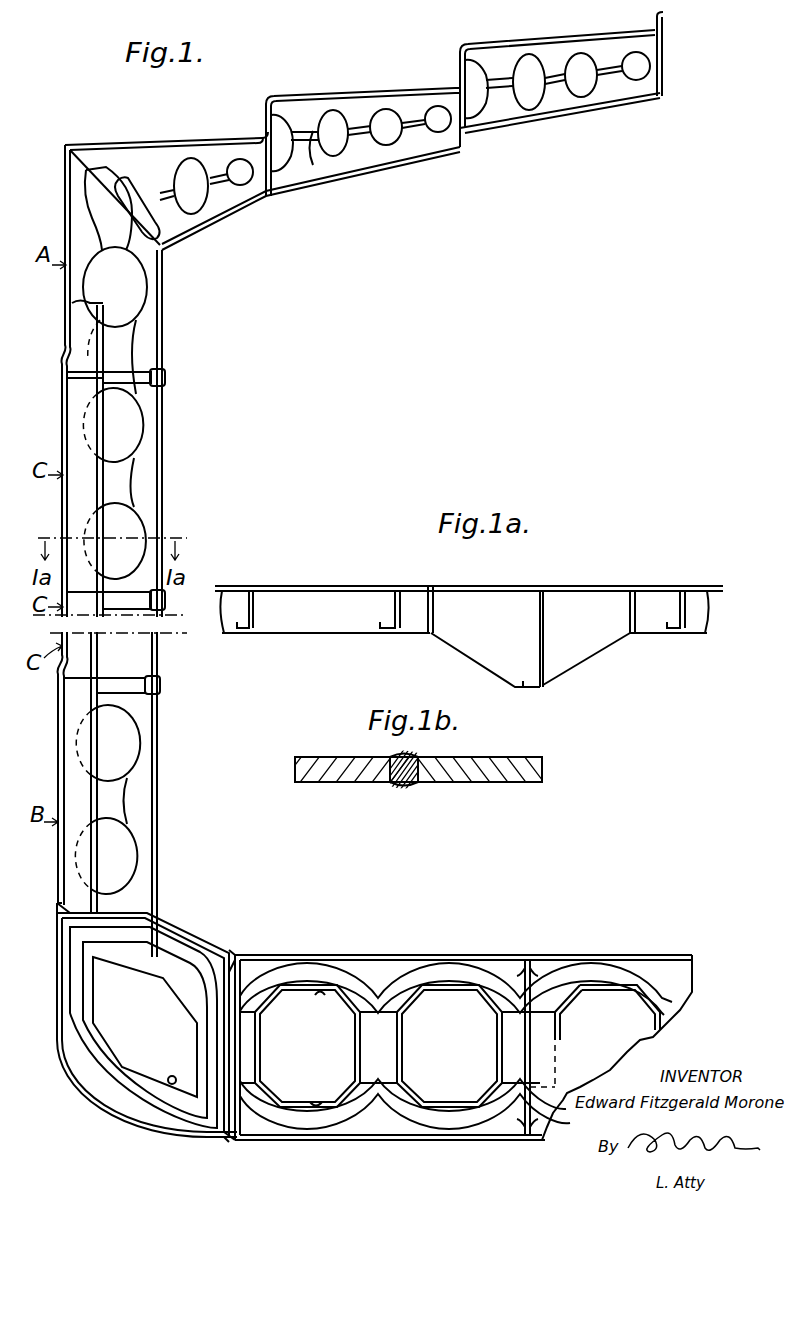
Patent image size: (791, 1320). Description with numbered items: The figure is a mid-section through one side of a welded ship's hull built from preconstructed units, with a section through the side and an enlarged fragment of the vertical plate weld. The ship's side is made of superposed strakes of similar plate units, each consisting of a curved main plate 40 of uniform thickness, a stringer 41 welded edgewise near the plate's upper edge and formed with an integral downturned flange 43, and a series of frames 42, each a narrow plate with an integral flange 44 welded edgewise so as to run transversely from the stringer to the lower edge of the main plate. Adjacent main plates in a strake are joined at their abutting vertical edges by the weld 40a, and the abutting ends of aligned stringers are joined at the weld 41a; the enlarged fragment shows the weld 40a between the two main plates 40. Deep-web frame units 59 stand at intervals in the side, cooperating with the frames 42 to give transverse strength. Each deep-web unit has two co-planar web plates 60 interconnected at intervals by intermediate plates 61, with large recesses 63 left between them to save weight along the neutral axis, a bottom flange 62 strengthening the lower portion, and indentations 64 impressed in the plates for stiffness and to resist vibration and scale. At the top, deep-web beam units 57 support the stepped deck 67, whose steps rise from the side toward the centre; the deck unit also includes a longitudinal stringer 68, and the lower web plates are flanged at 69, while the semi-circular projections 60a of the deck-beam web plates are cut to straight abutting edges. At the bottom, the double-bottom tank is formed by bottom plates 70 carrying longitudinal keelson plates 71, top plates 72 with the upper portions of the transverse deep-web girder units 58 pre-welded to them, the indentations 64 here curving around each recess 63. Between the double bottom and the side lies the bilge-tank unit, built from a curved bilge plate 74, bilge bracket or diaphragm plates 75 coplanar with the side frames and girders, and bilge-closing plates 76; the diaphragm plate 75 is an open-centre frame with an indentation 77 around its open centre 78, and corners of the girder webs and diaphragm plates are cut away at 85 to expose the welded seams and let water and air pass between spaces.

In FIG. 1, the main plate 40 is at (65, 199).
In FIG. 1A, the main plate 40 is at (355, 586).
In FIG. 1B, the main plate 40 is at (300, 764).
In FIG. 1A, the vertical weld between adjacent main plates 40a is at (434, 588).
In FIG. 1B, the vertical weld between adjacent main plates 40a is at (410, 760).
In FIG. 1, the stringer 41 is at (86, 378).
In FIG. 1A, the stringer 41 is at (318, 633).
In FIG. 1A, the weld between aligned stringers 41a is at (435, 640).
In FIG. 1, the frame 42 is at (78, 492).
In FIG. 1A, the frame 42 is at (392, 612).
In FIG. 1, the downturned flange of stringer 43 is at (165, 377).
In FIG. 1, the flange of frame 44 is at (103, 492).
In FIG. 1A, the flange of frame 44 is at (394, 633).
In FIG. 1, the deep-web beam unit 57 is at (566, 118).
In FIG. 1, the deep-web girder unit 58 is at (460, 946).
In FIG. 1, the deep-web frame unit 59 is at (171, 519).
In FIG. 1A, the deep-web frame unit 59 is at (545, 676).
In FIG. 1, the web plate 60 is at (360, 112).
In FIG. 1, the semi-circular projection 60a is at (356, 150).
In FIG. 1, the intermediate plate 61 is at (312, 160).
In FIG. 1, the bottom flange 62 is at (156, 855).
In FIG. 1, the recess 63 is at (320, 995).
In FIG. 1, the indentation 64 is at (435, 992).
In FIG. 1, the stepped deck 67 is at (208, 140).
In FIG. 1, the longitudinal stringer 68 is at (476, 135).
In FIG. 1, the flange of lower web plate 69 is at (436, 160).
In FIG. 1, the bottom plate 70 is at (472, 1142).
In FIG. 1, the keelson plate 71 is at (530, 1045).
In FIG. 1, the top plate 72 is at (46, 888).
In FIG. 1, the bilge plate 74 is at (70, 1095).
In FIG. 1, the bilge bracket plate 75 is at (92, 1092).
In FIG. 1, the bilge-closing plate 76 is at (196, 935).
In FIG. 1, the indentation around open centre 77 is at (122, 1087).
In FIG. 1, the open centre 78 is at (168, 1082).
In FIG. 1, the cut-away corner 85 is at (62, 913).